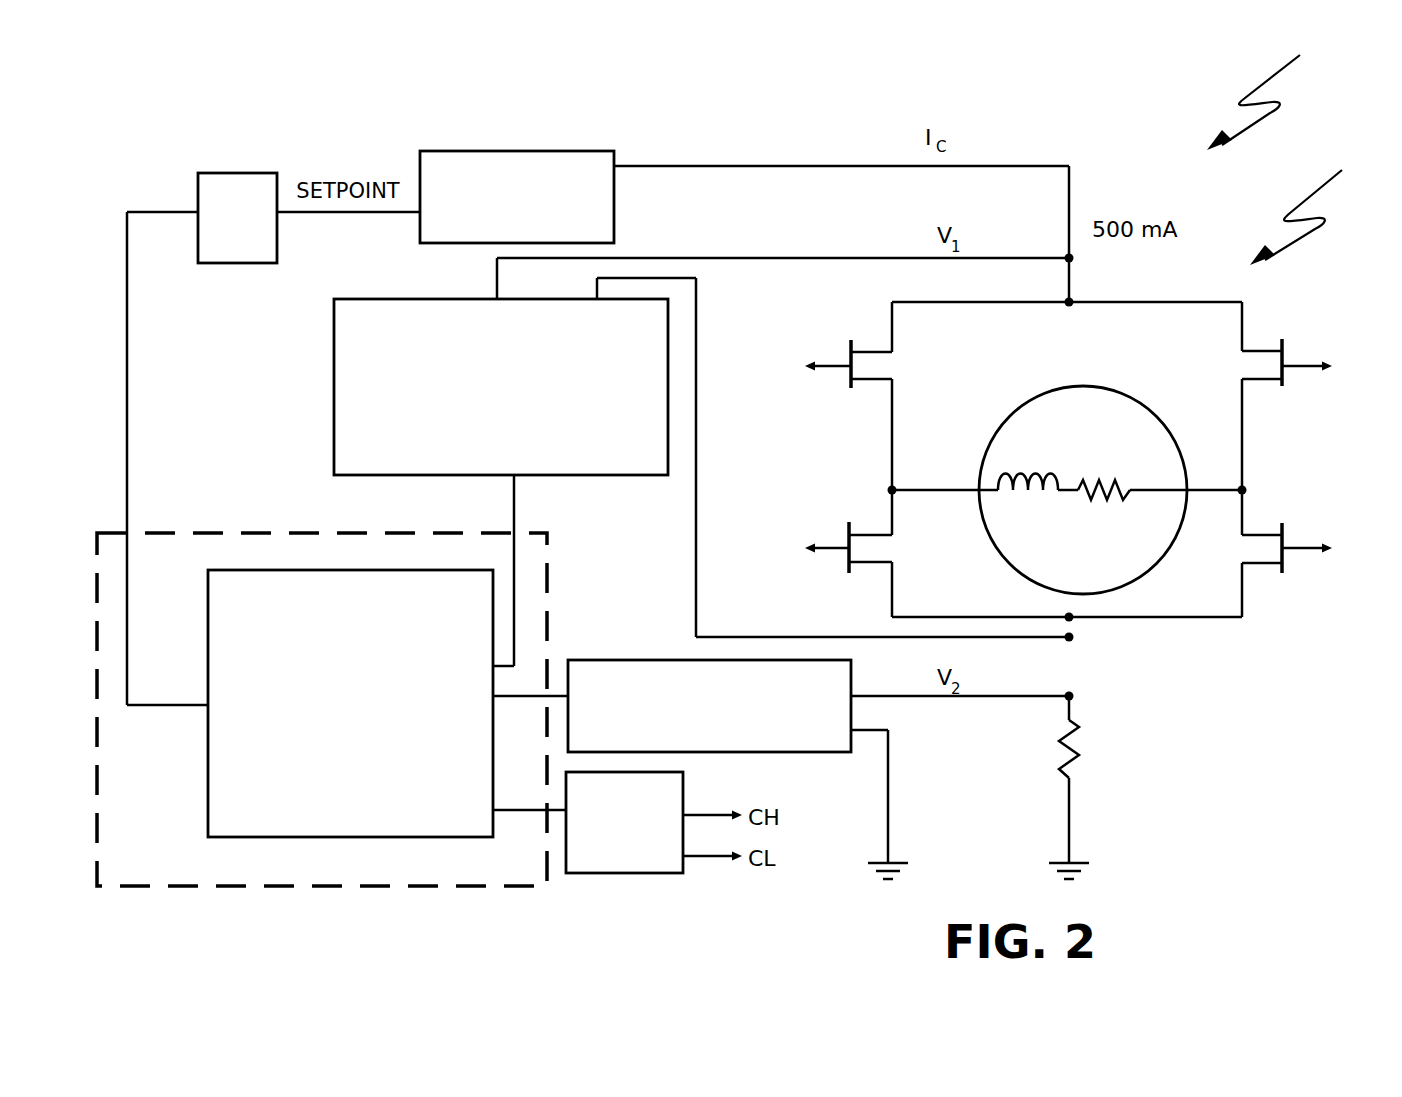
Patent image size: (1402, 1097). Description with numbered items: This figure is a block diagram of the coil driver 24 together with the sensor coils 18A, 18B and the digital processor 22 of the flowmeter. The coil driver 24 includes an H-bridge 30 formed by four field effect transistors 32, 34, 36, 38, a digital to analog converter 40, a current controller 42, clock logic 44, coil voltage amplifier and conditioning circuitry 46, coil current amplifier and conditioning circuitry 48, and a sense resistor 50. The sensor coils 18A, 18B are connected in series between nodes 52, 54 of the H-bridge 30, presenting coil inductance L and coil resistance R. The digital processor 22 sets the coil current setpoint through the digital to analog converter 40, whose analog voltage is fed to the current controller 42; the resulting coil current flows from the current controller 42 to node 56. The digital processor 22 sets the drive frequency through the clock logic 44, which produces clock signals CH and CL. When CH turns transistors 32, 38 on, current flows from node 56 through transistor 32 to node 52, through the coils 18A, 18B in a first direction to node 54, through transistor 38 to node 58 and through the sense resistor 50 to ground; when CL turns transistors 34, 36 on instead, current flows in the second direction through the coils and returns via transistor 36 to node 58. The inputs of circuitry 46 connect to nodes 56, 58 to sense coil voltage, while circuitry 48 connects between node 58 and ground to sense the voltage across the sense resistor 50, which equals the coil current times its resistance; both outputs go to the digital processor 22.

The digital processor 22 is at (255, 838).
The digital to analog converter 40 is at (240, 173).
The current controller 42 is at (480, 151).
The coil voltage amplifier and conditioning circuitry 46 is at (334, 375).
The coil current amplifier and conditioning circuitry 48 is at (645, 660).
The clock logic 44 is at (625, 873).
The field effect transistor 32 is at (851, 350).
The field effect transistor 34 is at (1265, 350).
The field effect transistor 36 is at (849, 562).
The field effect transistor 38 is at (1282, 568).
The node 52 is at (892, 490).
The node 54 is at (1245, 490).
The node 56 is at (1069, 305).
The node 58 is at (1073, 620).
The sense resistor 50 is at (1069, 805).
The sensor coil 18A is at (1105, 468).
The sensor coil 18B is at (1068, 504).
The coil driver 24 is at (1271, 95).
The H-bridge 30 is at (1313, 209).